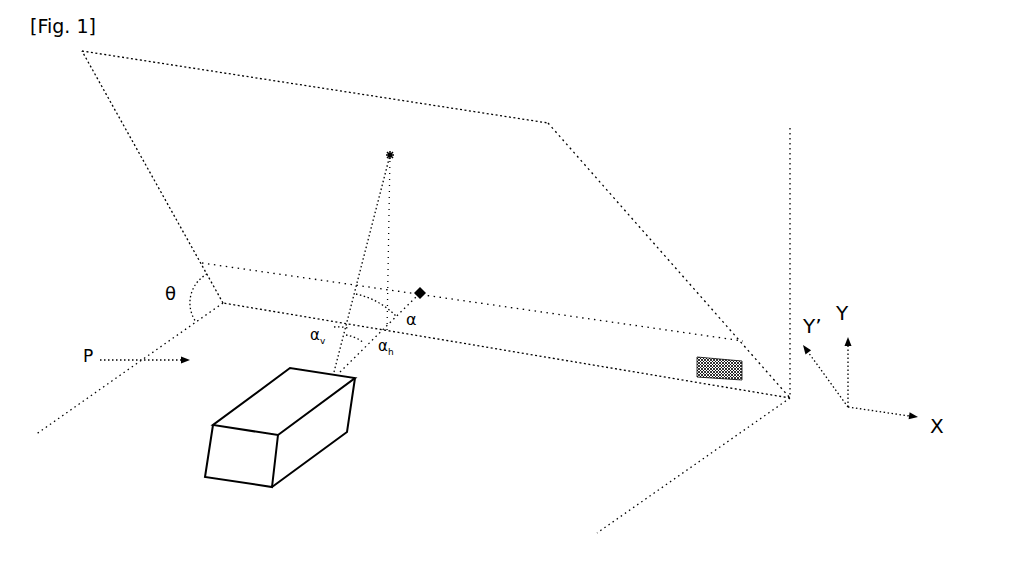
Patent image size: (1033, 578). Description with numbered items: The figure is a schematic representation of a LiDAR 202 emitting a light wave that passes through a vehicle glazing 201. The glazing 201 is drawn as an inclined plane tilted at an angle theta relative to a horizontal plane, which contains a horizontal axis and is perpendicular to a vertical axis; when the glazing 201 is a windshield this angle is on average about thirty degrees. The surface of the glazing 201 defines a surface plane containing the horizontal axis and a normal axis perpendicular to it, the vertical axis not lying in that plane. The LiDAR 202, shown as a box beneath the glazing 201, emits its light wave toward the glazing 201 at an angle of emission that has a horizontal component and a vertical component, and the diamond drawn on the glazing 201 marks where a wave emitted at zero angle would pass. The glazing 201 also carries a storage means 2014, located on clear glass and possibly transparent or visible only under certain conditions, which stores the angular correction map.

The vehicle glazing 201 is at (643, 214).
The LiDAR 202 is at (326, 440).
The storage means 2014 is at (697, 384).